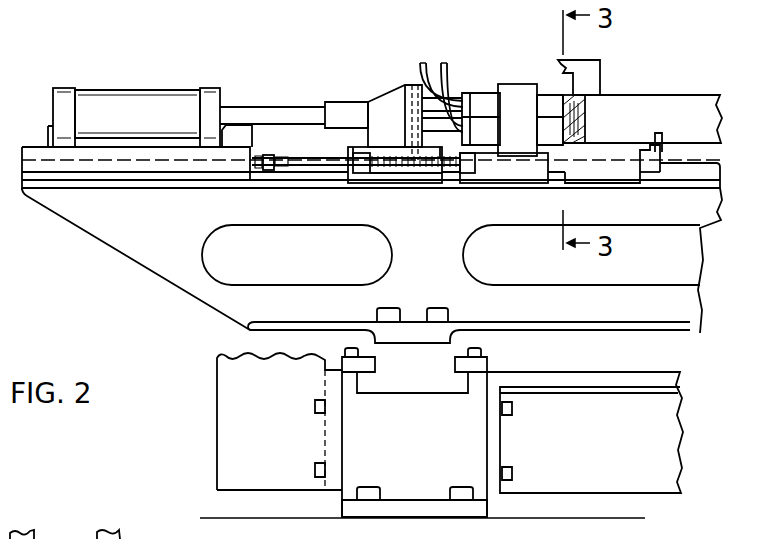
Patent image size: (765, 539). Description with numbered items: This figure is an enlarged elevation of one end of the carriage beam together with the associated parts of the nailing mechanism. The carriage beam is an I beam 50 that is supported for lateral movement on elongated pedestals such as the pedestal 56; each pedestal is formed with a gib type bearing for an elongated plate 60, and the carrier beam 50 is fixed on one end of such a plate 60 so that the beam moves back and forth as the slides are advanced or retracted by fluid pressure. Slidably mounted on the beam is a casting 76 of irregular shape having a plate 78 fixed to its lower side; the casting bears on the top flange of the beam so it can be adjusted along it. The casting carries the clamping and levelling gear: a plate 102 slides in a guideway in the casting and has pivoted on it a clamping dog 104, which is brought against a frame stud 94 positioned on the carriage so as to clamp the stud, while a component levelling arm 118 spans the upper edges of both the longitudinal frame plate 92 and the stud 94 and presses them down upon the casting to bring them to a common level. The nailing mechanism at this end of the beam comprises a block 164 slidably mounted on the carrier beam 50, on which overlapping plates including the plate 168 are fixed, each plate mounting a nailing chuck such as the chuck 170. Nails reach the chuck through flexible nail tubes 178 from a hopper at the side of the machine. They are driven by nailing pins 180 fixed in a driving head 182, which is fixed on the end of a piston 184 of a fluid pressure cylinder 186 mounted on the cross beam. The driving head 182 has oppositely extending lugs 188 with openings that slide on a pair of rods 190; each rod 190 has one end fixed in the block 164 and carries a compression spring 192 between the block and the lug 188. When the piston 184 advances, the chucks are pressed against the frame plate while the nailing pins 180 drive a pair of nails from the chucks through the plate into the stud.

The I beam 50 is at (148, 262).
The elongated pedestal 56 is at (345, 430).
The elongated plate 60 is at (410, 384).
The casting 76 is at (636, 168).
The plate 78 is at (622, 180).
The plate 92 is at (587, 116).
The frame stud 94 is at (683, 95).
The plate 102 is at (660, 157).
The clamping dog 104 is at (660, 137).
The component levelling arm 118 is at (603, 73).
The block 164 is at (514, 180).
The plate 168 is at (517, 95).
The nailing chuck 170 is at (560, 136).
The flexible nail tube 178 is at (448, 66).
The nailing pin 180 is at (430, 62).
The driving head 182 is at (386, 99).
The piston 184 is at (270, 106).
The fluid pressure cylinder 186 is at (136, 88).
The lug 188 is at (356, 174).
The rod 190 is at (299, 158).
The compression spring 192 is at (400, 174).